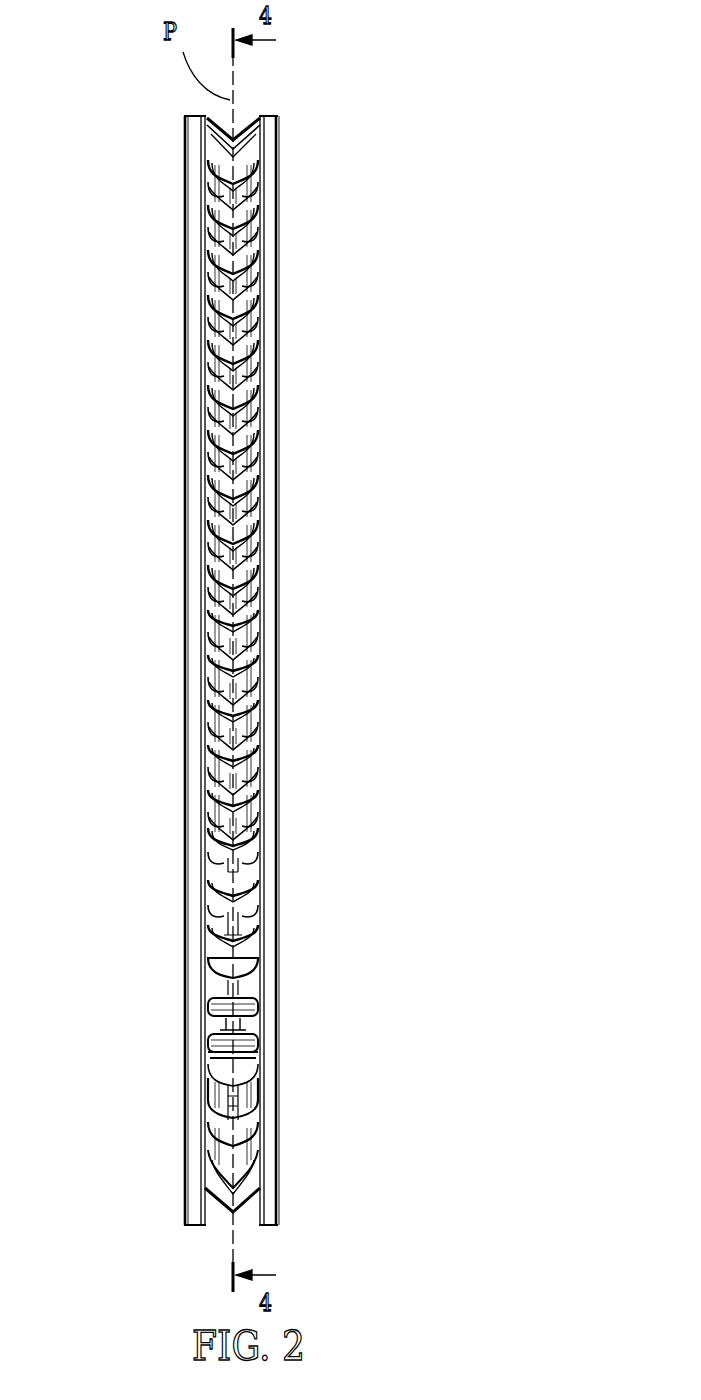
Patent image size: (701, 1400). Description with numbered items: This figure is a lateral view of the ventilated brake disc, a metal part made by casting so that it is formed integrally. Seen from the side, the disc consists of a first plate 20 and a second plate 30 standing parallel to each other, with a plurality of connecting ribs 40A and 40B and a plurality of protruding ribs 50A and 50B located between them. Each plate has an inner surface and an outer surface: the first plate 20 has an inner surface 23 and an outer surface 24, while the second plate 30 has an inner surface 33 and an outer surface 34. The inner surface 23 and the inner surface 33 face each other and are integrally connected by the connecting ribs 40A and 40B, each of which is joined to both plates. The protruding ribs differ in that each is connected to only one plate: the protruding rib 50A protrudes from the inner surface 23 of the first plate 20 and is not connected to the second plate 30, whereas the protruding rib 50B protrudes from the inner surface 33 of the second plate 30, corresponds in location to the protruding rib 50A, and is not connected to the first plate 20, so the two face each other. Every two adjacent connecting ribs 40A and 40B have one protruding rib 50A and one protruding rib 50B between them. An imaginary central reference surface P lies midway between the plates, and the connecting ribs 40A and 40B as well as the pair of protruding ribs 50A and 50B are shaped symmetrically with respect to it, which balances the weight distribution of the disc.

The first plate 20 is at (186, 114).
The second plate 30 is at (260, 114).
The outer surface 24 is at (185, 1101).
The outer surface 34 is at (283, 748).
The inner surface 23 is at (256, 1069).
The inner surface 33 is at (233, 834).
The connecting rib 40A is at (213, 262).
The connecting rib 40B is at (252, 352).
The protruding rib 50A is at (207, 392).
The protruding rib 50B is at (258, 394).